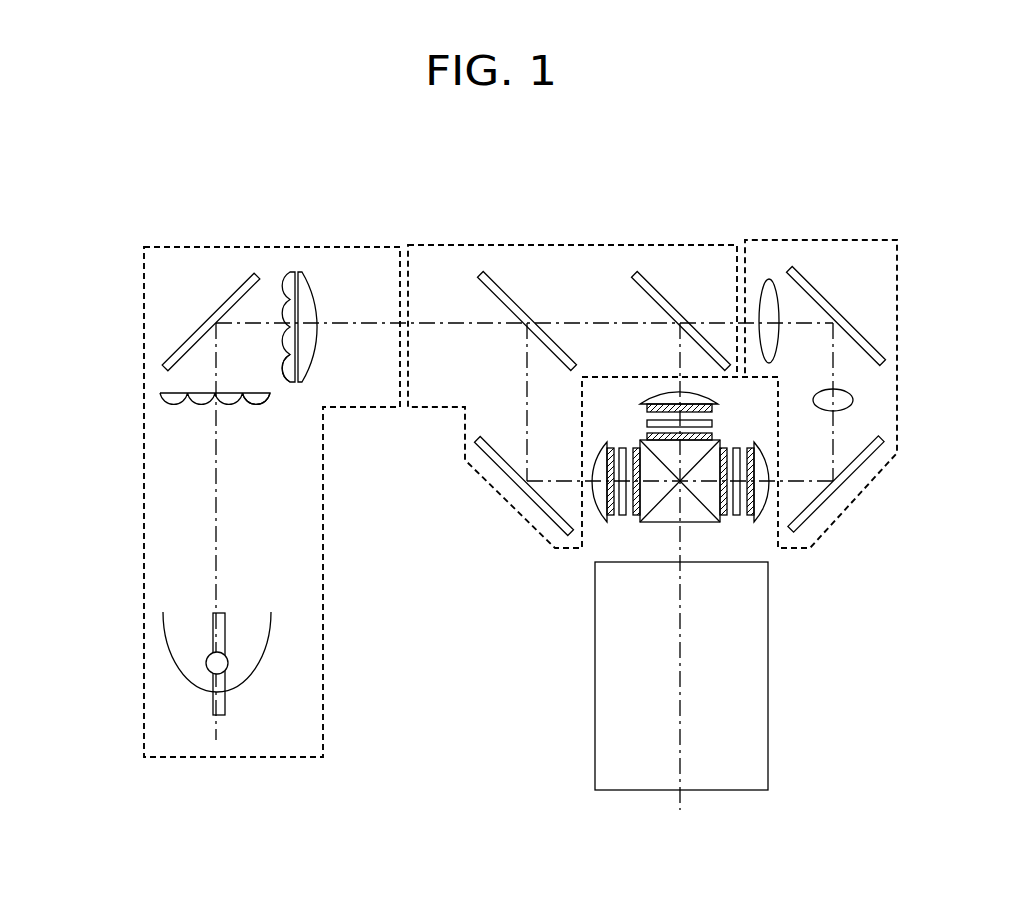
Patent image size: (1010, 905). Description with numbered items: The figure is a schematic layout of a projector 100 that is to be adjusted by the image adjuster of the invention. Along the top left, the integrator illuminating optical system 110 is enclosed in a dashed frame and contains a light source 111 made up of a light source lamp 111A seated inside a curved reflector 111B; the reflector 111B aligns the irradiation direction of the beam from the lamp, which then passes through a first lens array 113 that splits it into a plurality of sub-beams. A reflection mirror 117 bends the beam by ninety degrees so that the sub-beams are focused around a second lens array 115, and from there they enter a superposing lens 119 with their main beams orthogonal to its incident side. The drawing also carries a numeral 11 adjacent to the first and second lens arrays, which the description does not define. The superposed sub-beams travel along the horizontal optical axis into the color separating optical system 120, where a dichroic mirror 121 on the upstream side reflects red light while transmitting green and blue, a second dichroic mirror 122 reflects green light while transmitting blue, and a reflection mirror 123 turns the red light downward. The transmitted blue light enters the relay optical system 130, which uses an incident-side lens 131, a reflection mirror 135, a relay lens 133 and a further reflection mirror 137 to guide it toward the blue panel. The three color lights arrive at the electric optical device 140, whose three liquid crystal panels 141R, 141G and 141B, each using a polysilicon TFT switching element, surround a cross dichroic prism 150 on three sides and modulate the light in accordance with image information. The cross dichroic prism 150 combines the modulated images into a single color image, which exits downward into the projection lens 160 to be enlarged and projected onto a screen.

The projector 100 is at (216, 203).
The integrator illuminating optical system 110 is at (142, 700).
The light source 111 is at (262, 576).
The light source lamp 111A is at (225, 633).
The reflector 111B is at (263, 655).
The first lens array 113 is at (260, 407).
The small lens 11 is at (175, 407).
The second lens array 115 is at (288, 272).
The reflection mirror 117 is at (228, 300).
The superposing lens 119 is at (310, 272).
The color separating optical system 120 is at (570, 243).
The dichroic mirror 121 is at (490, 272).
The dichroic mirror 122 is at (642, 272).
The reflection mirror 123 is at (479, 446).
The relay optical system 130 is at (897, 293).
The incident-side lens 131 is at (770, 279).
The relay lens 133 is at (853, 400).
The reflection mirror 135 is at (882, 352).
The reflection mirror 137 is at (873, 448).
The electric optical device 140 is at (618, 529).
The liquid crystal panel 141R is at (590, 495).
The liquid crystal panel 141G is at (712, 424).
The liquid crystal panel 141B is at (736, 516).
The cross dichroic prism 150 is at (663, 515).
The projection lens 160 is at (752, 648).